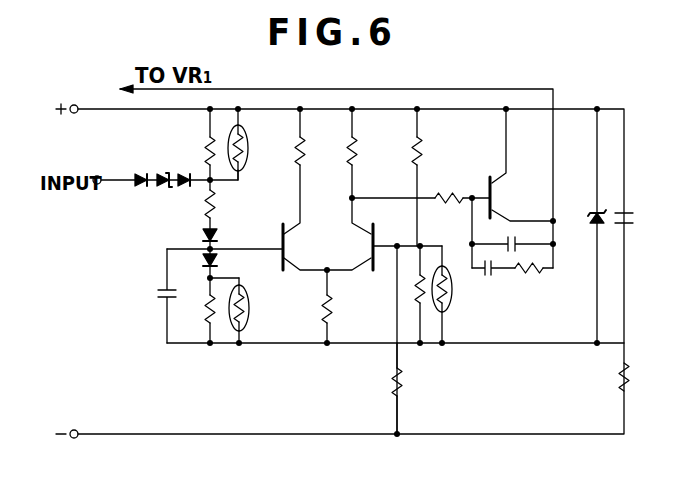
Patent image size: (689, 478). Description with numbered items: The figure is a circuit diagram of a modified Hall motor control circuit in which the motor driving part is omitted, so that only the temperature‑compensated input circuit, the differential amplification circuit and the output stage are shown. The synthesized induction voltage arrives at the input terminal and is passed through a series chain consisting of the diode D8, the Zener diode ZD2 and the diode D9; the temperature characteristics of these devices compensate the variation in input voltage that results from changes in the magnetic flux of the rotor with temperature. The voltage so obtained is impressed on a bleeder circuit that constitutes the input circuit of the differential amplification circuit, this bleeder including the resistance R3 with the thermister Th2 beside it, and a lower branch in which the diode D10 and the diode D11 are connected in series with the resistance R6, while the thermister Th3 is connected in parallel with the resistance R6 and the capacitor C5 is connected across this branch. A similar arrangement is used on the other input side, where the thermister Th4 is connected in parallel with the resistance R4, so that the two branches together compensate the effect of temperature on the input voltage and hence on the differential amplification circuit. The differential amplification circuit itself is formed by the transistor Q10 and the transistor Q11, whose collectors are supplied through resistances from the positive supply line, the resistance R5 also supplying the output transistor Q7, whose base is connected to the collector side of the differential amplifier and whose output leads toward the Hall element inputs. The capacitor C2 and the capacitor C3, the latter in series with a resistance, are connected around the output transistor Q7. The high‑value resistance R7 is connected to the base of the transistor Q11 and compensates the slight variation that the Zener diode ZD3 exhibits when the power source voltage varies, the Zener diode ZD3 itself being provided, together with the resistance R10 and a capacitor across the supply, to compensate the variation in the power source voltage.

The diode D8 is at (141, 176).
The Zener diode ZD2 is at (166, 195).
The diode D9 is at (188, 194).
The resistance R3 is at (200, 144).
The thermister Th2 is at (253, 144).
The diode D10 is at (224, 240).
The diode D11 is at (224, 273).
The capacitor C5 is at (158, 296).
The resistance R6 is at (201, 319).
The thermister Th3 is at (255, 310).
The transistor Q10 is at (305, 189).
The transistor Q11 is at (350, 189).
The resistance R5 is at (427, 177).
The resistance R4 is at (411, 294).
The thermister Th4 is at (452, 289).
The output transistor Q7 is at (521, 165).
The capacitor C2 is at (505, 242).
The capacitor C3 is at (488, 275).
The Zener diode ZD3 is at (585, 226).
The resistance R10 is at (610, 379).
The resistance R7 is at (408, 388).